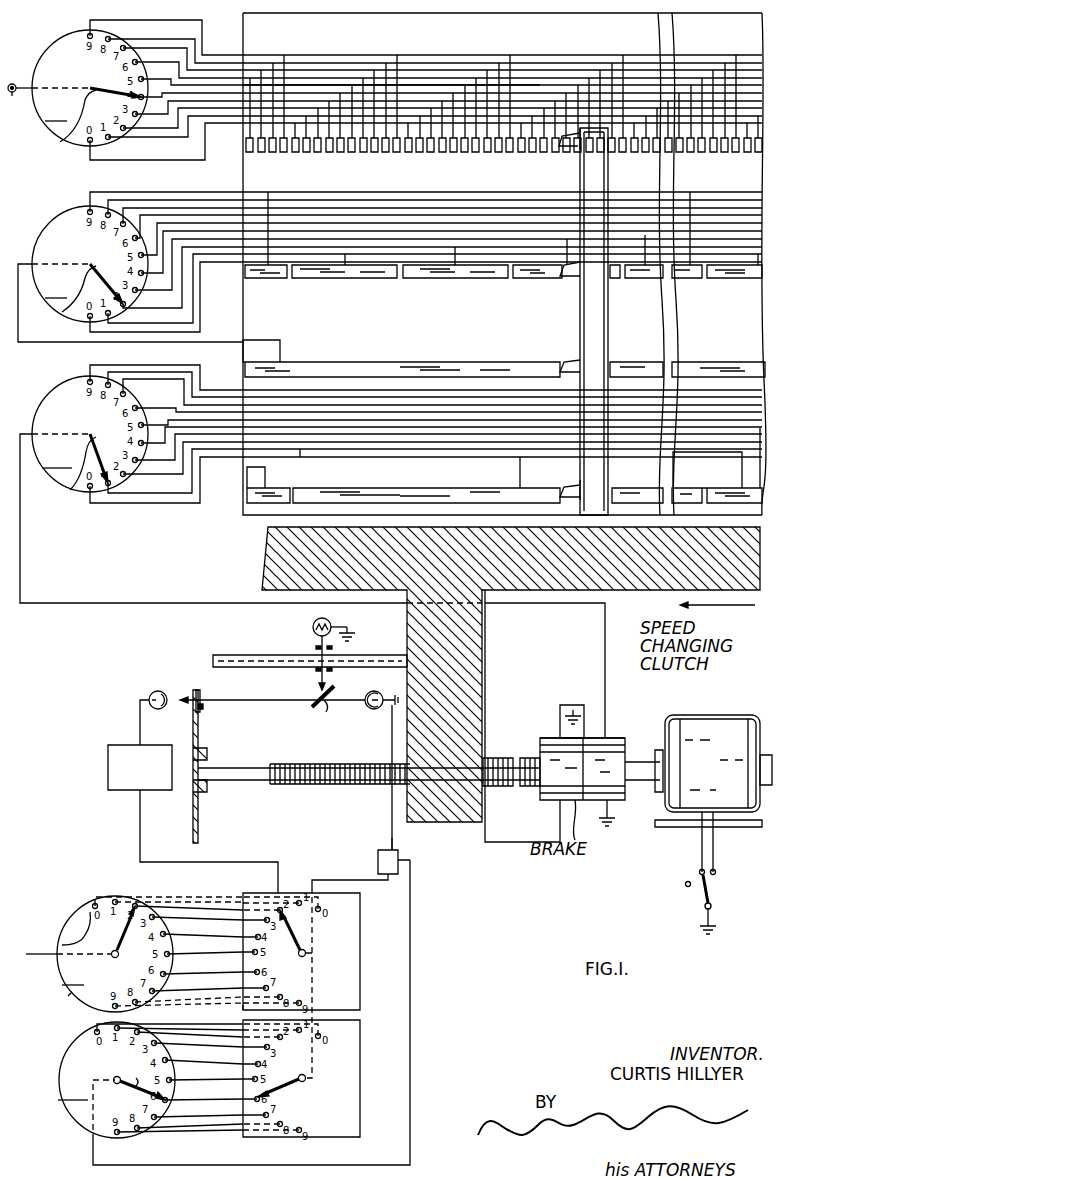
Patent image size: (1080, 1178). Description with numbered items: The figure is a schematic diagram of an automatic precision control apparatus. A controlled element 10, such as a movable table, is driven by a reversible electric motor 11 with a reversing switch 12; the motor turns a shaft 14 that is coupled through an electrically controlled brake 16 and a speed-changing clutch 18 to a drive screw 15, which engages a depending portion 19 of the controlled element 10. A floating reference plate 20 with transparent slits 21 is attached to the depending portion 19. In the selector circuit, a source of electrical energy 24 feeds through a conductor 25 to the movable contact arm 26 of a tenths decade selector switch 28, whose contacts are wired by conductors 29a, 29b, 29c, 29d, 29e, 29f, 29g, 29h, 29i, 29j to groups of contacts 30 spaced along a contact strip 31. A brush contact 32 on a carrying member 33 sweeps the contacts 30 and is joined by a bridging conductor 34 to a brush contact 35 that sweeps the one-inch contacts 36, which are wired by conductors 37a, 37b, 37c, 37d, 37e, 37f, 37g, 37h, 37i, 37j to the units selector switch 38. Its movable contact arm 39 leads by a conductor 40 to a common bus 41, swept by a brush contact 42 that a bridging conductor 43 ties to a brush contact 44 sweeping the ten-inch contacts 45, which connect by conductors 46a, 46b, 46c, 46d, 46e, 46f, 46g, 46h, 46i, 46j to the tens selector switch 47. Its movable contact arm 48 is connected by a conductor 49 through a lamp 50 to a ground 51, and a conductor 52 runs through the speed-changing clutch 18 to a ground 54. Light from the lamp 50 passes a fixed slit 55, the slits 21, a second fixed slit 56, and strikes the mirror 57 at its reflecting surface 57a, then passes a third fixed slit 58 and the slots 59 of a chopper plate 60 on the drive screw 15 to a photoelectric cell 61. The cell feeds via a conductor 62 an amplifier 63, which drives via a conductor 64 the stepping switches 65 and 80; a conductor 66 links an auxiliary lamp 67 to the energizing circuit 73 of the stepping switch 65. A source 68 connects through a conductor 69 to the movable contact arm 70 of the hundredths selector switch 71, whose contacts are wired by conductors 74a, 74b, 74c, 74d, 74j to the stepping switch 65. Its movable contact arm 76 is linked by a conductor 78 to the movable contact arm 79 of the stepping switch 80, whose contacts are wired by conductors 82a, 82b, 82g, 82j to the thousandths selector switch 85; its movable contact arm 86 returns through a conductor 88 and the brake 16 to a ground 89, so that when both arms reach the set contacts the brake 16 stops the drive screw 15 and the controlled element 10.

The controlled element 10 is at (620, 590).
The reversible electric motor 11 is at (712, 715).
The reversing switch 12 is at (710, 886).
The shaft 14 is at (633, 750).
The drive screw 15 is at (524, 756).
The electrically controlled brake 16 is at (550, 800).
The speed-changing clutch 18 is at (615, 738).
The depending portion 19 is at (485, 690).
The floating reference plate 20 is at (244, 655).
The transparent slits 21 is at (350, 662).
The source of electrical energy 24 is at (20, 82).
The conductor 25 is at (22, 94).
The movable contact arm 26 is at (60, 142).
The decade selector switch 28 is at (46, 46).
The conductor 29a is at (130, 160).
The conductor 29b is at (128, 140).
The conductor 29c is at (180, 140).
The conductor 29d is at (175, 112).
The conductor 29e is at (540, 95).
The conductor 29f is at (192, 74).
The conductor 29g is at (189, 66).
The conductor 29h is at (160, 44).
The conductor 29i is at (200, 36).
The conductor 29j is at (181, 22).
The contacts 30 is at (711, 162).
The contact strip 31 is at (773, 119).
The brush contact 32 is at (563, 154).
The carrying member 33 is at (604, 332).
The bridging conductor 34 is at (606, 178).
The brush contact 35 is at (563, 280).
The contacts 36 is at (700, 278).
The conductor 37a is at (202, 325).
The conductor 37b is at (196, 303).
The conductor 37c is at (504, 225).
The conductor 37d is at (147, 281).
The conductor 37e is at (121, 136).
The conductor 37f is at (121, 127).
The conductor 37g is at (121, 119).
The conductor 37h is at (121, 112).
The conductor 37i is at (121, 107).
The conductor 37j is at (162, 190).
The units digit decade selector switch 38 is at (40, 219).
The movable contact arm 39 is at (62, 312).
The conductor 40 is at (38, 344).
The common bus 41 is at (302, 372).
The brush contact 42 is at (562, 362).
The bridging conductor 43 is at (604, 472).
The brush contact 44 is at (562, 488).
The contacts 45 is at (702, 490).
The conductor 46a is at (150, 514).
The conductor 46b is at (198, 496).
The conductor 46c is at (172, 492).
The conductor 46d is at (147, 446).
The conductor 46e is at (121, 221).
The conductor 46f is at (121, 212).
The conductor 46g is at (121, 206).
The conductor 46h is at (121, 202).
The conductor 46i is at (121, 198).
The conductor 46j is at (194, 391).
The tens digit decade selector switch 47 is at (40, 398).
The movable contact arm 48 is at (70, 490).
The conductor 49 is at (94, 604).
The lamp 50 is at (312, 630).
The ground or reference point 51 is at (356, 624).
The conductor 52 is at (604, 650).
The ground or reference point 54 is at (610, 815).
The fixed slit 55 is at (312, 650).
The second fixed slit 56 is at (312, 674).
The mirror 57 is at (326, 710).
The reflecting surface 57a is at (338, 700).
The third fixed slit 58 is at (202, 690).
The slots 59 is at (196, 700).
The chopper plate 60 is at (198, 806).
The photoelectric cell 61 is at (160, 692).
The conductor 62 is at (140, 698).
The amplifier 63 is at (108, 770).
The conductor 64 is at (140, 850).
The stepping switch 65 is at (338, 946).
The conductor 66 is at (388, 838).
The auxiliary lamp 67 is at (380, 710).
The source of electrical energy 68 is at (30, 958).
The conductor 69 is at (50, 940).
The movable contact arm 70 is at (76, 902).
The fourth decade selector switch 71 is at (68, 996).
The energizing circuit 73 is at (380, 874).
The conductor 74a is at (148, 898).
The conductor 74b is at (178, 902).
The conductor 74c is at (220, 910).
The conductor 74d is at (121, 495).
The conductor 74j is at (212, 1016).
The movable contact arm 76 is at (293, 944).
The conductor 78 is at (314, 1000).
The movable contact arm 79 is at (280, 1090).
The stepping switch 80 is at (352, 1082).
The conductor 82a is at (197, 1005).
The conductor 82b is at (157, 1002).
The conductor 82g is at (218, 1102).
The conductor 82j is at (172, 1128).
The fifth decade selector switch 85 is at (72, 1118).
The movable contact arm 86 is at (136, 1078).
The conductor 88 is at (410, 1005).
The ground or reference point 89 is at (577, 705).